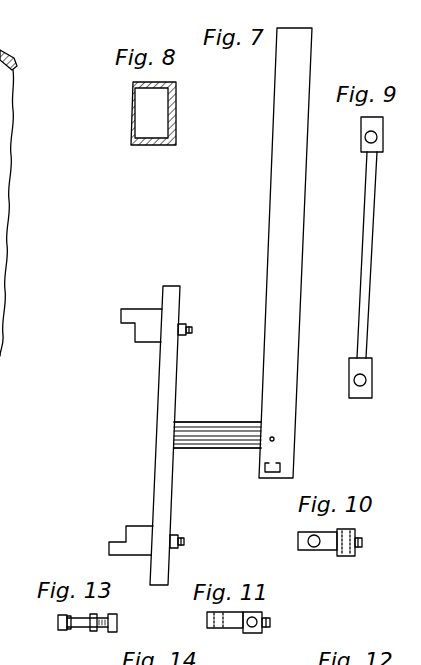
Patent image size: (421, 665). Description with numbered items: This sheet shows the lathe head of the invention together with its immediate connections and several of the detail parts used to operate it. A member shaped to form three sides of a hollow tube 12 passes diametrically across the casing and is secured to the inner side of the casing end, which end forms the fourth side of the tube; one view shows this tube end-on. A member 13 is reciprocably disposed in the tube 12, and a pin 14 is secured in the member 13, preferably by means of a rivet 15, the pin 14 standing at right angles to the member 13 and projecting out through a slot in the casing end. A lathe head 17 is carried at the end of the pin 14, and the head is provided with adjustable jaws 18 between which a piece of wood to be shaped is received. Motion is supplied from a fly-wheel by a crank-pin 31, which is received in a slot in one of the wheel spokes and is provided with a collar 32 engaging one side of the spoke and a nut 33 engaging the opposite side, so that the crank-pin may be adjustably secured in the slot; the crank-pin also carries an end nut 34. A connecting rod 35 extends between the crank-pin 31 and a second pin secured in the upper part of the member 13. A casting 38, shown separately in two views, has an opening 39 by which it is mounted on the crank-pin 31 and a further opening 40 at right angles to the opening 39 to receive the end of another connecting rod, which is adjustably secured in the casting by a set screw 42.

In FIG. 8, the hollow tube 12 is at (176, 117).
In FIG. 7, the member 13 is at (285, 253).
In FIG. 8, the member 13 is at (145, 113).
In FIG. 7, the pin 14 is at (213, 422).
In FIG. 7, the rivet 15 is at (277, 439).
In FIG. 7, the lathe head 17 is at (160, 396).
In FIG. 7, the adjustable jaws 18 is at (150, 433).
In FIG. 13, the crank-pin 31 is at (76, 630).
In FIG. 13, the collar 32 is at (93, 631).
In FIG. 13, the nut 33 is at (115, 622).
In FIG. 13, the end nut 34 is at (58, 625).
In FIG. 9, the connecting rod 35 is at (364, 223).
In FIG. 10, the casting 38 is at (326, 552).
In FIG. 11, the casting 38 is at (230, 630).
In FIG. 10, the opening 39 is at (308, 541).
In FIG. 11, the opening 40 is at (253, 628).
In FIG. 10, the set screw 42 is at (362, 549).
In FIG. 11, the set screw 42 is at (270, 622).